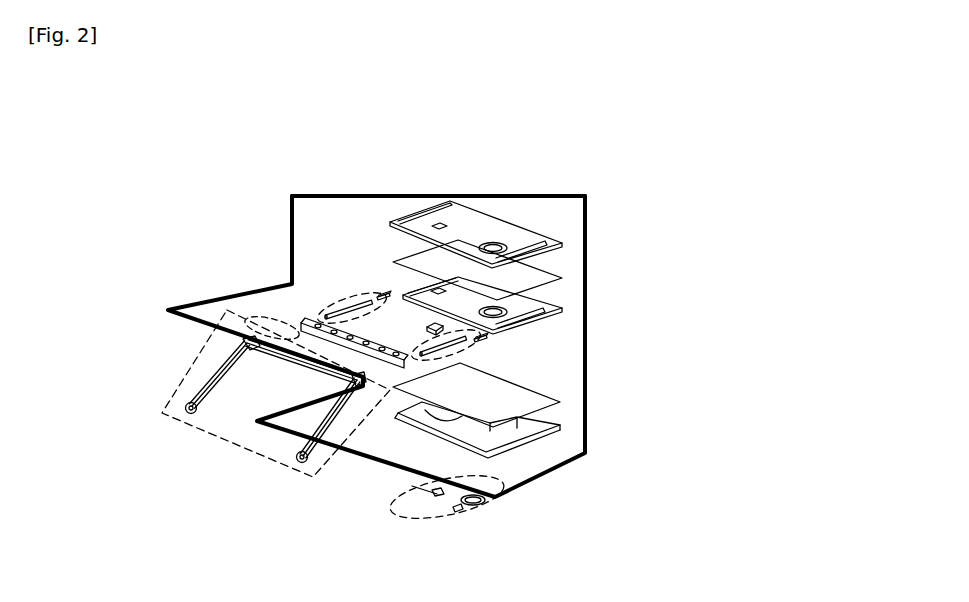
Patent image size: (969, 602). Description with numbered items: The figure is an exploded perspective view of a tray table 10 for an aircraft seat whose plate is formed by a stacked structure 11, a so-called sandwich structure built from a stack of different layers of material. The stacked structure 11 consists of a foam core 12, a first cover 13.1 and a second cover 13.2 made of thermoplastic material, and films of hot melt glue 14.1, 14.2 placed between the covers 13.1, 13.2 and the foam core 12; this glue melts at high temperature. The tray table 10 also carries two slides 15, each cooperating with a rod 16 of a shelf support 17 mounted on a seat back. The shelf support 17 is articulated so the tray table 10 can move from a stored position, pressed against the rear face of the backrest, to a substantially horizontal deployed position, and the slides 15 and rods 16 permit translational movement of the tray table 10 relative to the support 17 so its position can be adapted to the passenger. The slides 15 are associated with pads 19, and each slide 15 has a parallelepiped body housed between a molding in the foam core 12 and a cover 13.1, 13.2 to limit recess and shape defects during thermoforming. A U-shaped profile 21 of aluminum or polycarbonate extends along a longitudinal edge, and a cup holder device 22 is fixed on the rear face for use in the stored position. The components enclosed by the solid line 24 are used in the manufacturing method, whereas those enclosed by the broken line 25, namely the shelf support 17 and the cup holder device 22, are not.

The tray table 10 is at (262, 178).
The stacked structure 11 is at (563, 266).
The foam core 12 is at (526, 295).
The first cover 13.1 is at (487, 230).
The second cover 13.2 is at (487, 440).
The film of hot melt glue 14.1 is at (517, 282).
The film of hot melt glue 14.2 is at (543, 402).
The slide 15 is at (330, 304).
The rod 16 is at (262, 322).
The shelf support 17 is at (200, 390).
The pad 19 is at (383, 295).
The U-shaped profile 21 is at (315, 318).
The cup holder device 22 is at (468, 524).
The solid line 24 is at (383, 196).
The broken line 25 is at (210, 432).